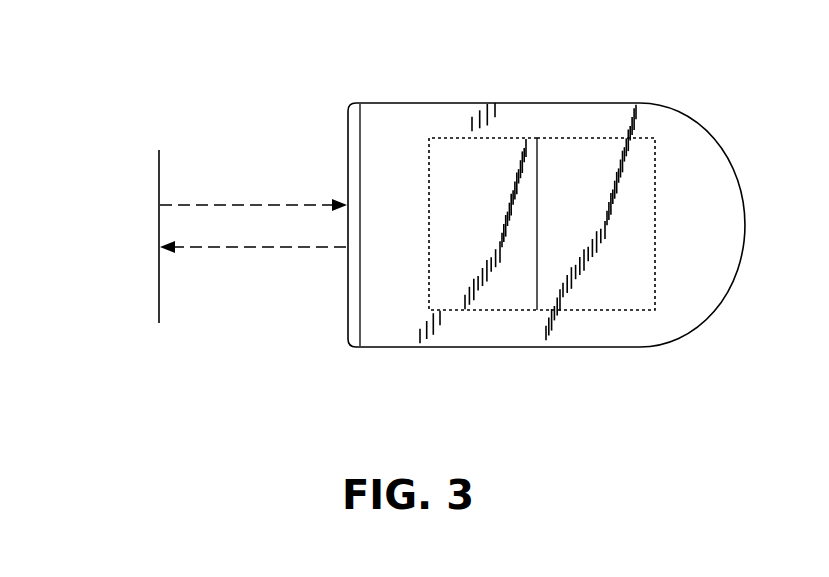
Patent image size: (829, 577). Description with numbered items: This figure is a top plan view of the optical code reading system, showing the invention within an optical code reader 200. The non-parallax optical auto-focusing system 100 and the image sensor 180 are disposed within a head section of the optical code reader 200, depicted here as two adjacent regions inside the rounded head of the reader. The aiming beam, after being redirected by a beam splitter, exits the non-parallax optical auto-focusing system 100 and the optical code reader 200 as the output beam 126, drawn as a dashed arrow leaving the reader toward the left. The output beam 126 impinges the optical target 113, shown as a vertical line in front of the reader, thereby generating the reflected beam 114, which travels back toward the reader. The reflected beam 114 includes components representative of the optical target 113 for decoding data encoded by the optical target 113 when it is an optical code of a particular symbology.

The optical code reader 200 is at (266, 86).
The optical target 113 is at (159, 190).
The reflected beam 114 is at (271, 204).
The output beam 126 is at (253, 250).
The non-parallax optical auto-focusing system 100 is at (478, 223).
The image sensor 180 is at (596, 222).